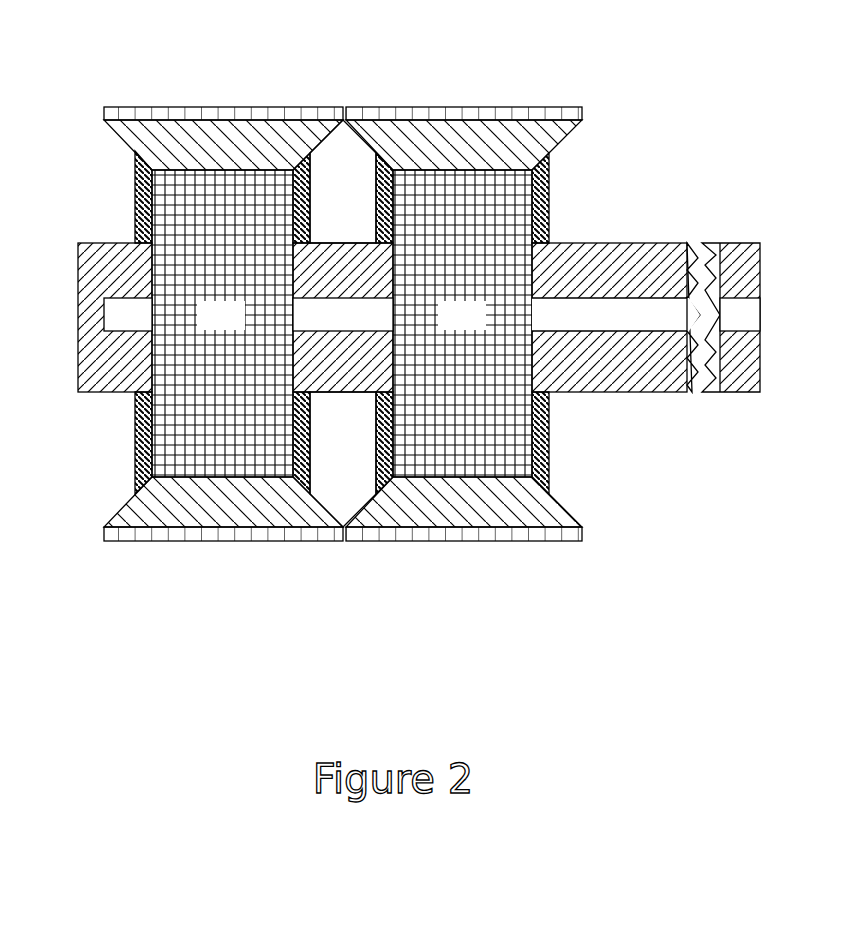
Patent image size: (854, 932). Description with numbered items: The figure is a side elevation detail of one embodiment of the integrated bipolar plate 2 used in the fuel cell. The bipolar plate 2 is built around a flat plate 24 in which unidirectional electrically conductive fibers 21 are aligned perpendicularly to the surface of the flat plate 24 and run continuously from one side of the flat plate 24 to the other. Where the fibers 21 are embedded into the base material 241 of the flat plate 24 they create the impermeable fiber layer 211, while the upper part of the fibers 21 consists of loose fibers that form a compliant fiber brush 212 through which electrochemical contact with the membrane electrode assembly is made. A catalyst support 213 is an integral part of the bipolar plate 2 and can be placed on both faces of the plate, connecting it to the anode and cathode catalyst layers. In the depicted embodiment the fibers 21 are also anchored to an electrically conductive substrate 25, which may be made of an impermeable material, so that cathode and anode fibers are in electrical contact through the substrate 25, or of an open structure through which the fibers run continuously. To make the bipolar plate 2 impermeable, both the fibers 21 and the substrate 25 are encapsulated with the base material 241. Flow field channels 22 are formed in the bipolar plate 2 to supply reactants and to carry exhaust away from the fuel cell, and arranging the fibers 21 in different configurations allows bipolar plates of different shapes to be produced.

The bipolar plate 2 is at (382, 344).
The unidirectional electrically conductive fibers 21 is at (343, 301).
The impermeable fiber layer 211 is at (197, 328).
The compliant fiber brush 212 is at (199, 155).
The catalyst support 213 is at (228, 106).
The flow field channels 22 is at (327, 200).
The flat plate 24 is at (382, 322).
The base material 241 is at (608, 255).
The substrate 25 is at (432, 369).